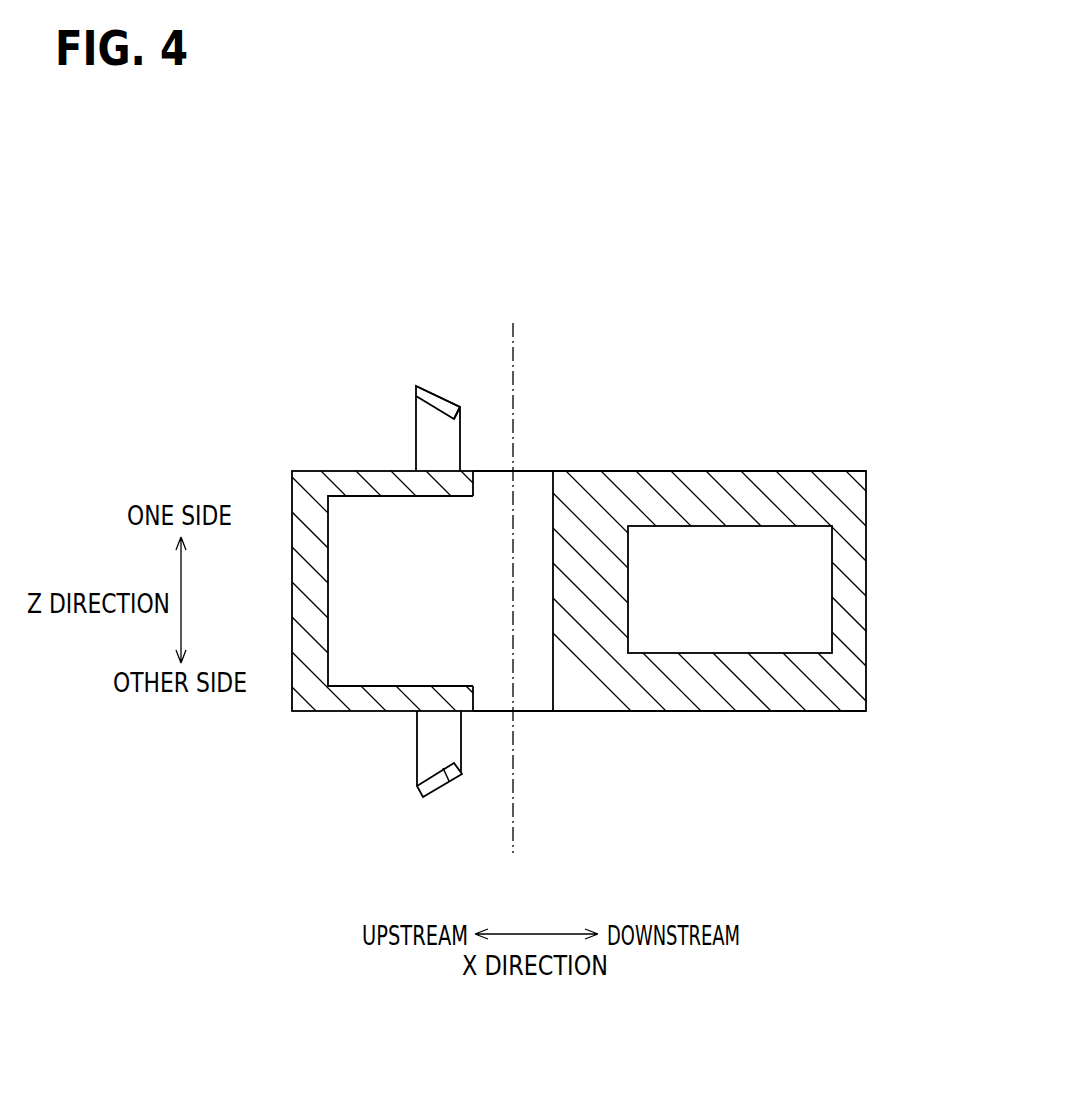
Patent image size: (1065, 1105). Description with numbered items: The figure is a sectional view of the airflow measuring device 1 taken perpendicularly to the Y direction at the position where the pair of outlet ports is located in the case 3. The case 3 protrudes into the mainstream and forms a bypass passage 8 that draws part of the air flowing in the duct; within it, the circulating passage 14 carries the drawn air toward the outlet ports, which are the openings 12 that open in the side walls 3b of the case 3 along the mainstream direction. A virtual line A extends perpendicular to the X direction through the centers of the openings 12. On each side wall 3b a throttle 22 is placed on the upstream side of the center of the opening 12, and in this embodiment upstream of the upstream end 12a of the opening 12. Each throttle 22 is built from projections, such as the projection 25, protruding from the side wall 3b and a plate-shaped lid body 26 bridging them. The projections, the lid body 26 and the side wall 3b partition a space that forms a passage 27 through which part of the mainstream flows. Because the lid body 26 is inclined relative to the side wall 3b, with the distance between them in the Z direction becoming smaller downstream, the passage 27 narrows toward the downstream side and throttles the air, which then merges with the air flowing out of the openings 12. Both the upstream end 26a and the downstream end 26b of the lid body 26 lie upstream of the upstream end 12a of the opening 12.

The airflow measuring device 1 is at (889, 381).
The case 3 is at (838, 474).
The side wall 3b is at (757, 471).
The bypass passage 8 is at (573, 633).
The outlet port 12 is at (528, 470).
The upstream end of the opening 12a is at (473, 471).
The circulating passage 14 is at (357, 657).
The throttle 22 is at (373, 571).
The projection 25 is at (423, 418).
The lid body 26 is at (423, 383).
The upstream end of the lid body 26a is at (428, 390).
The downstream end of the lid body 26b is at (458, 407).
The passage 27 is at (432, 442).
The virtual line A is at (517, 362).